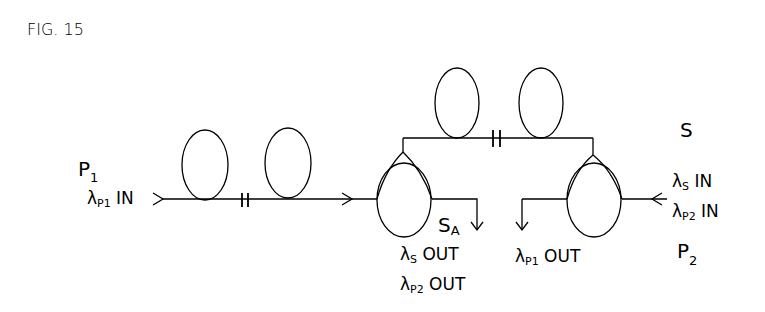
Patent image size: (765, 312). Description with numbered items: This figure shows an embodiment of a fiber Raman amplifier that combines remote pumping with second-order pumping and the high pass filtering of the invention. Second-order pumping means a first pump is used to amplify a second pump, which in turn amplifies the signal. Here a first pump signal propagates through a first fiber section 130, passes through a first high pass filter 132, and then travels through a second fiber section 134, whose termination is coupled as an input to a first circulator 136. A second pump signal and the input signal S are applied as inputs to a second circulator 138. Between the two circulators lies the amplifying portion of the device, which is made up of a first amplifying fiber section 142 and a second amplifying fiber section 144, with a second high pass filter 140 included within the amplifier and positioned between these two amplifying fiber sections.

The first fiber section 130 is at (183, 155).
The first high pass filter 132 is at (243, 183).
The second fiber section 134 is at (310, 152).
The first circulator 136 is at (387, 180).
The second circulator 138 is at (613, 177).
The second high pass filter 140 is at (497, 122).
The first amplifying fiber section 142 is at (558, 90).
The second amplifying fiber section 144 is at (437, 95).